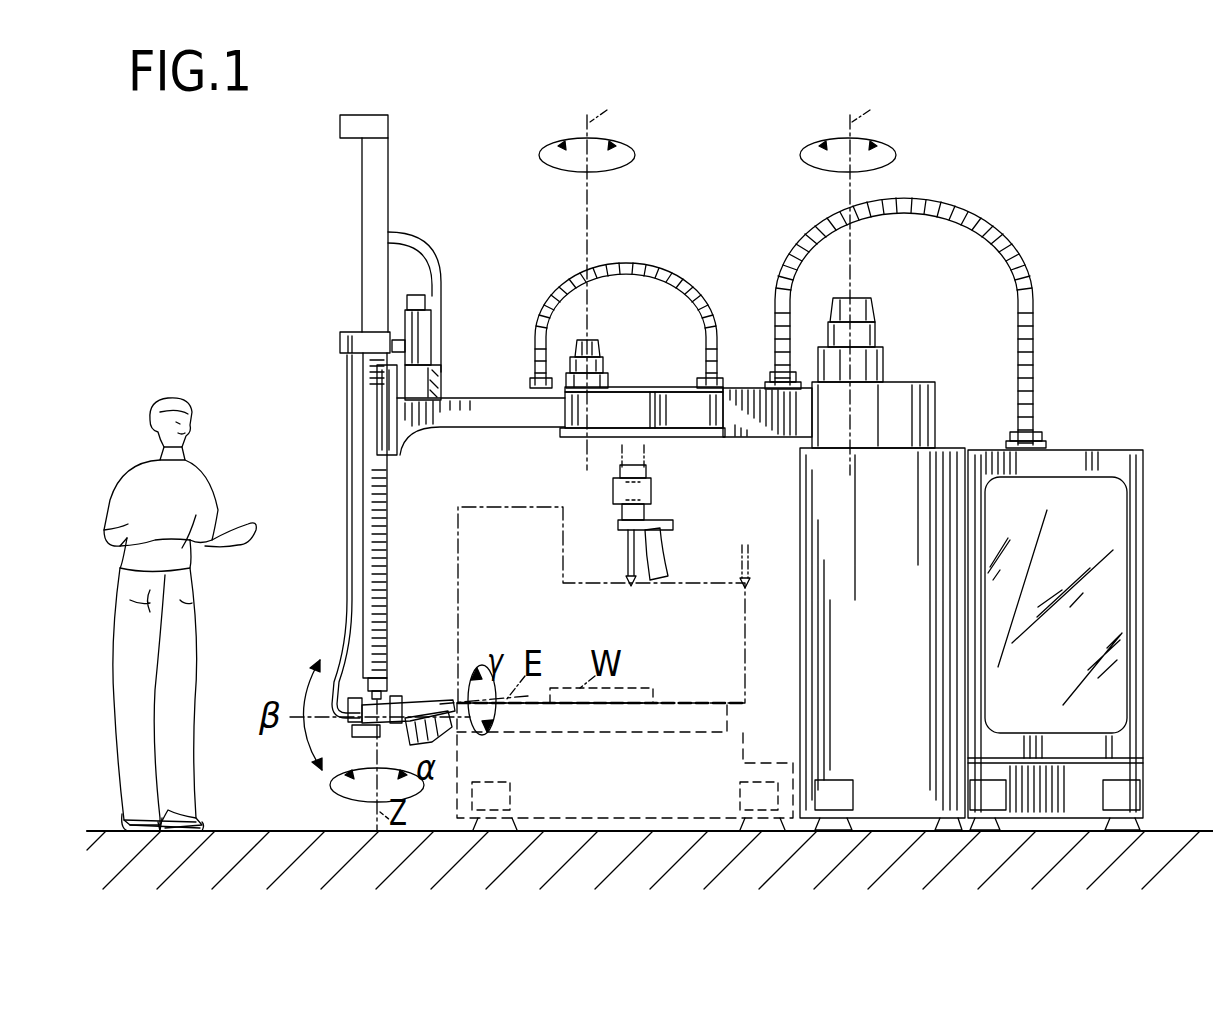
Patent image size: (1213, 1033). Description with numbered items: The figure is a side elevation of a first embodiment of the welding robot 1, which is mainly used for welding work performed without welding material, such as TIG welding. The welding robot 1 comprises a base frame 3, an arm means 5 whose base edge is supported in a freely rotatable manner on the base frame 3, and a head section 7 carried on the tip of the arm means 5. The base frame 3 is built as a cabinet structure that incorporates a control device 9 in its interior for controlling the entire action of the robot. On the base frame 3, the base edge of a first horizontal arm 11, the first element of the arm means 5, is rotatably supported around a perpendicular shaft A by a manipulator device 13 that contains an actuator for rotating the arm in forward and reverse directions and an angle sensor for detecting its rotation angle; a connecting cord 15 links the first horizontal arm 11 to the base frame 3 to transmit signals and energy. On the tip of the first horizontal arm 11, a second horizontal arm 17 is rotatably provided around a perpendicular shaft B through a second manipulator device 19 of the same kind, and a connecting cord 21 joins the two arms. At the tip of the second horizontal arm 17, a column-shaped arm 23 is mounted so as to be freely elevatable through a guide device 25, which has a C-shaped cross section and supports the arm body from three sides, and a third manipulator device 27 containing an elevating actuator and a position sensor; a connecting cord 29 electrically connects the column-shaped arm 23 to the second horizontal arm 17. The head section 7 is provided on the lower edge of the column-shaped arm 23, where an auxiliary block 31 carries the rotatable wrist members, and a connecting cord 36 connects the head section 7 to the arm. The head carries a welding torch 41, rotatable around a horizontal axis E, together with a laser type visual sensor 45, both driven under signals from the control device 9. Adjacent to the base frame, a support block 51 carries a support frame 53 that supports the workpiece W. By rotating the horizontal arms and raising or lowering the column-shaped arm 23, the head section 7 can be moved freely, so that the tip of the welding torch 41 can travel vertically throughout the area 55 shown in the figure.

The welding robot 1 is at (345, 212).
The base frame 3 is at (1148, 500).
The arm means 5 is at (727, 130).
The head section 7 is at (660, 493).
The control device 9 is at (1115, 609).
The first horizontal arm 11 is at (751, 398).
The manipulator device 13 is at (879, 338).
The connecting cord 15 is at (1031, 338).
The second horizontal arm 17 is at (483, 408).
The second manipulator device 19 is at (601, 371).
The connecting cord 21 is at (666, 270).
The column-shaped arm 23 is at (396, 536).
The guide device 25 is at (396, 452).
The third manipulator device 27 is at (435, 300).
The connecting cord 29 is at (437, 378).
The auxiliary block 31 is at (398, 652).
The connecting cord 36 is at (347, 502).
The welding torch 41 is at (623, 571).
The laser type visual sensor 45 is at (666, 566).
The support block 51 is at (723, 753).
The support frame 53 is at (658, 706).
The area 55 is at (472, 507).